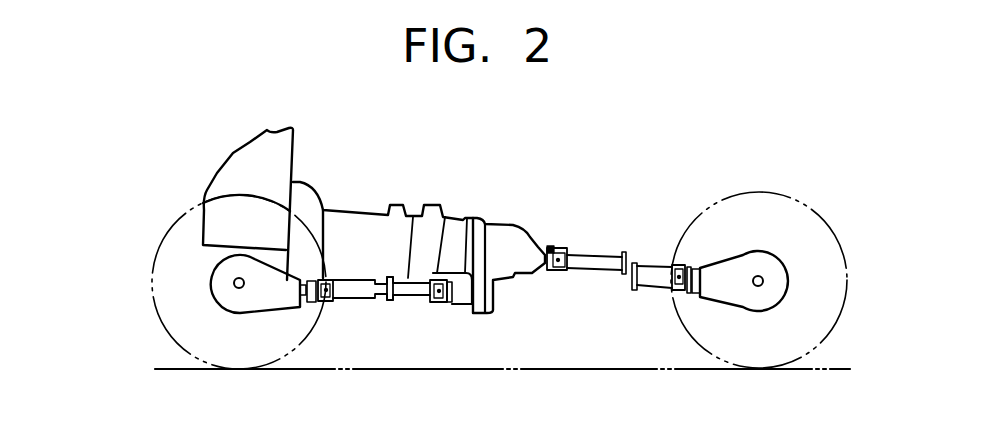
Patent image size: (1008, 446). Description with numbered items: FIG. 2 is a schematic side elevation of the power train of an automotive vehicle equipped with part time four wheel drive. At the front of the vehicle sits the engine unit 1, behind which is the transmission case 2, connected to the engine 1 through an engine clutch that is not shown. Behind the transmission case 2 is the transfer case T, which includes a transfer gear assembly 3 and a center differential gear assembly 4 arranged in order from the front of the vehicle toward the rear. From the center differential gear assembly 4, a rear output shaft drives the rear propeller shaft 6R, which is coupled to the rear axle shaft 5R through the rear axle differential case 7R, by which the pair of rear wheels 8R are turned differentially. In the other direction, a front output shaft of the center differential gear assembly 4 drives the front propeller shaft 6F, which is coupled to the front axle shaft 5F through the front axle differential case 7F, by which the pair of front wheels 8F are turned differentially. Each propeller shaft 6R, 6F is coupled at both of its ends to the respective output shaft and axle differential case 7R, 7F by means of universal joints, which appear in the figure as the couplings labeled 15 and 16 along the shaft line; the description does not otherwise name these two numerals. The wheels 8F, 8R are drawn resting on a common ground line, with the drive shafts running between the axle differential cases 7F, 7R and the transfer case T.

The engine unit 1 is at (243, 168).
The transmission case 2 is at (362, 218).
The transfer gear assembly 3 is at (463, 220).
The center differential gear assembly 4 is at (510, 228).
The front axle shaft 5F is at (237, 287).
The rear axle shaft 5R is at (762, 277).
The front propeller shaft 6F is at (400, 293).
The rear propeller shaft 6R is at (592, 272).
The front axle differential case 7F is at (267, 302).
The rear axle differential case 7R is at (727, 268).
The front wheels 8F is at (173, 228).
The rear wheels 8R is at (818, 208).
The universal joint 15 is at (551, 247).
The universal joint 16 is at (447, 303).
The transfer case T is at (537, 232).